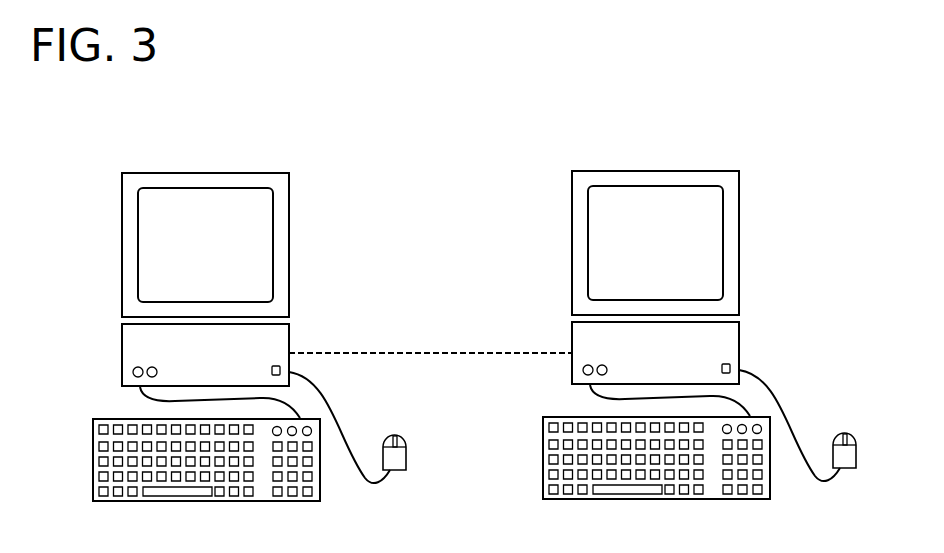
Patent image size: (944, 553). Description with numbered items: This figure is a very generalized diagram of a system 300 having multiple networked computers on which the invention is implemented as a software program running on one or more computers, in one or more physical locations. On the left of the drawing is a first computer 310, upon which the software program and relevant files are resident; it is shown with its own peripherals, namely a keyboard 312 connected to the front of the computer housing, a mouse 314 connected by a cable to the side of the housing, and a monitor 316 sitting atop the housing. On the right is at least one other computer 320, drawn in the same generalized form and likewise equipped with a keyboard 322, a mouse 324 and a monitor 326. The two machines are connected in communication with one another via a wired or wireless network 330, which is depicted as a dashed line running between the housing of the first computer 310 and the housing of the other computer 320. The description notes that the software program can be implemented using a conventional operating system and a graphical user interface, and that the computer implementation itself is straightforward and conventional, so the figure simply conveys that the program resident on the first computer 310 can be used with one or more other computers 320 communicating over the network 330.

The system 300 is at (158, 113).
The computer 310 is at (291, 333).
The keyboard 312 is at (223, 501).
The mouse 314 is at (404, 474).
The monitor 316 is at (185, 173).
The other computer 320 is at (741, 331).
The keyboard 322 is at (673, 499).
The mouse 324 is at (854, 472).
The monitor 326 is at (635, 171).
The network 330 is at (423, 352).